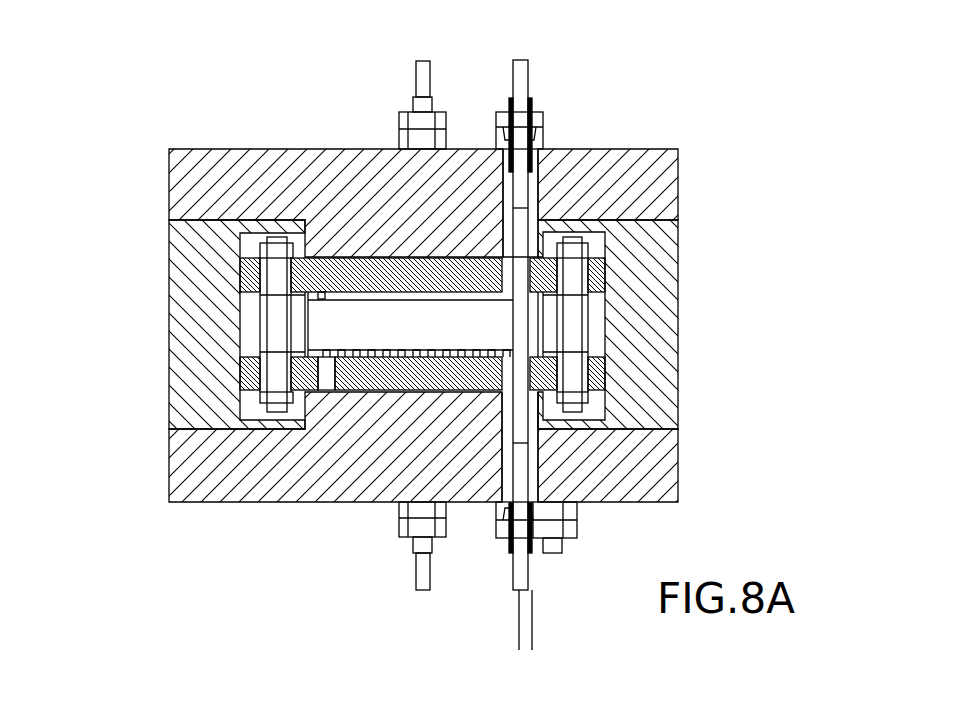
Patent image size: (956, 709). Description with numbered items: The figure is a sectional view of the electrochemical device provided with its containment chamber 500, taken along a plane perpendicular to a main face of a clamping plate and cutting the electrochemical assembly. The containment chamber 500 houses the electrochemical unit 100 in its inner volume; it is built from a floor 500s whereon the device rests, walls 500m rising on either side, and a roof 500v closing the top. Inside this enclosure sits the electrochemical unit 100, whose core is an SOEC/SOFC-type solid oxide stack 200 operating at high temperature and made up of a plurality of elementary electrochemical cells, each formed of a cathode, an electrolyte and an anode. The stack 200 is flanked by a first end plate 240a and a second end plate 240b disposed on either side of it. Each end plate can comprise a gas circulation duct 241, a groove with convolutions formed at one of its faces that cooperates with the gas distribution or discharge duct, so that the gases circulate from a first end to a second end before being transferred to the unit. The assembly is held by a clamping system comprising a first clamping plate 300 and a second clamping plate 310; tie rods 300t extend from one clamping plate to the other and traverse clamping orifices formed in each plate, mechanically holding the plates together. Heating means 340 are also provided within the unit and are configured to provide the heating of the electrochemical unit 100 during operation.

The electrochemical unit 100 is at (456, 272).
The SOEC/SOFC-type solid oxide stack 200 is at (315, 320).
The first end plate 240a is at (535, 353).
The second end plate 240b is at (358, 296).
The gas circulation duct 241 is at (357, 357).
The first clamping plate 300 is at (242, 373).
The tie rods 300t is at (272, 330).
The second clamping plate 310 is at (257, 275).
The heating means 340 is at (547, 287).
The containment chamber 500 is at (640, 158).
The roof 500v is at (362, 149).
The walls 500m is at (173, 325).
The floor 500s is at (173, 478).